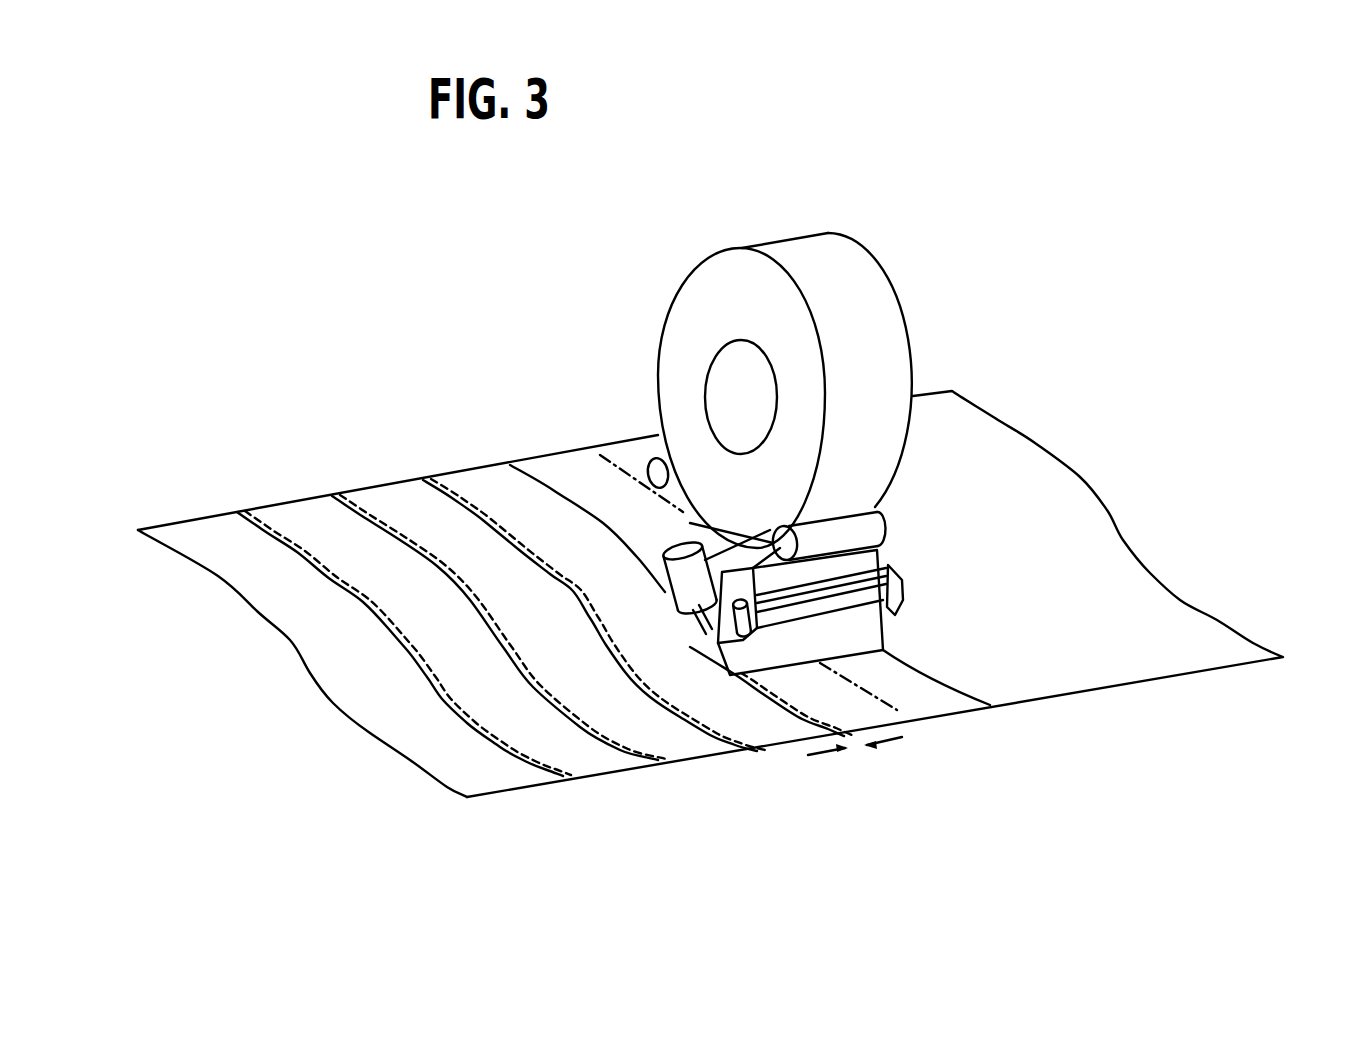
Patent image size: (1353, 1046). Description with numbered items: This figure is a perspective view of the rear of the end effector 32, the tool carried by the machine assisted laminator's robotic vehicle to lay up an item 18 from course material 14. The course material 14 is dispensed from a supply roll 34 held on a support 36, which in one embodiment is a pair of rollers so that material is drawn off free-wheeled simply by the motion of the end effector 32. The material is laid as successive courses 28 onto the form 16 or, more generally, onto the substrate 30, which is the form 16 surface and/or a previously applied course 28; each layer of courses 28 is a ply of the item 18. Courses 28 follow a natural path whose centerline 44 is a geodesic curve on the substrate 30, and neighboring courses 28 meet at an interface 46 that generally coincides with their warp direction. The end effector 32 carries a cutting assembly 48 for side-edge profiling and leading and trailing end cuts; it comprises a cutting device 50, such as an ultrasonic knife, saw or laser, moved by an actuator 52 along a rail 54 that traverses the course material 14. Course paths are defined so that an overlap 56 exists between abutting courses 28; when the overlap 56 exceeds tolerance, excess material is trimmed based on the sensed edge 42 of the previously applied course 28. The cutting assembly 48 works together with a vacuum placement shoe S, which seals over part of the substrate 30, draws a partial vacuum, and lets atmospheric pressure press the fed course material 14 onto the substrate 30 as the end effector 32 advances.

The course material 14 is at (863, 324).
The form 16 is at (710, 594).
The substrate 30 is at (1058, 520).
The item 18 is at (305, 742).
The courses 28 is at (397, 500).
The end effector 32 is at (852, 196).
The supply roll 34 is at (732, 373).
The support 36 is at (782, 543).
The edge 42 is at (543, 487).
The centerline 44 is at (883, 703).
The interface 46 is at (563, 777).
The cutting assembly 48 is at (903, 573).
The cutting device 50 is at (722, 660).
The actuator 52 is at (680, 570).
The rail 54 is at (883, 643).
The overlap 56 is at (853, 747).
The vacuum placement shoe S is at (890, 617).